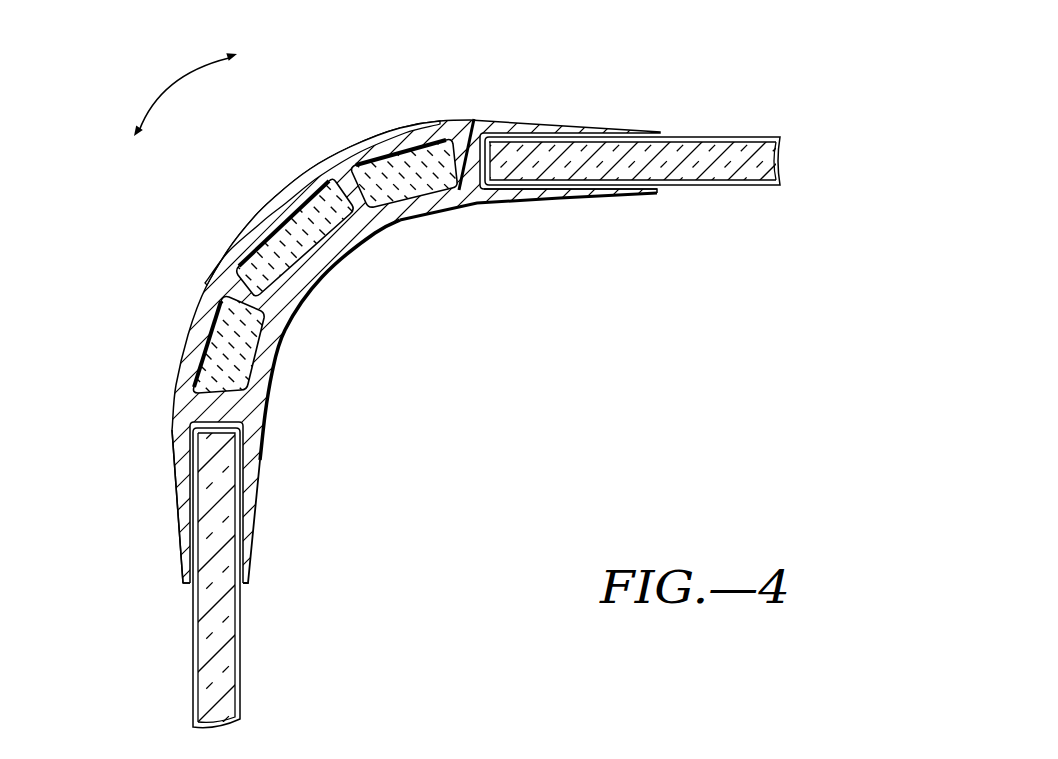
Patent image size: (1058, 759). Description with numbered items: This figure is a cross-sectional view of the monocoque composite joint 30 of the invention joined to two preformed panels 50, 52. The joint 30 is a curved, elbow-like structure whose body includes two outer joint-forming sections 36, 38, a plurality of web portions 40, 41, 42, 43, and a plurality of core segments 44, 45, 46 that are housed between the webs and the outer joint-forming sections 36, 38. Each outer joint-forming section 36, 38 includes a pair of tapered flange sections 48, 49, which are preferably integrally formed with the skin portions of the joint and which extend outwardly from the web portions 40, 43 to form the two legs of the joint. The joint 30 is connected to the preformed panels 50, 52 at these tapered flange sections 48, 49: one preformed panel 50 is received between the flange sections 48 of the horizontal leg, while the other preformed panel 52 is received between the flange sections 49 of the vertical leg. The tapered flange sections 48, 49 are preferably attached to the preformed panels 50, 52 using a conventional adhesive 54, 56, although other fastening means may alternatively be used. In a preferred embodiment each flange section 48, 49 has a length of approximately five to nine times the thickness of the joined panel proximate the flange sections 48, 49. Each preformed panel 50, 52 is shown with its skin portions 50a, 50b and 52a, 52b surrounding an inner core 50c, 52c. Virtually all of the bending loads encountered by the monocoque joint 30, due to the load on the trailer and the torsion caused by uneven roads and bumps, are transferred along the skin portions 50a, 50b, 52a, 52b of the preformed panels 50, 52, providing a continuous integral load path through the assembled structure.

The monocoque composite joint 30 is at (326, 111).
The outer joint-forming section 36 is at (243, 414).
The outer joint-forming section 38 is at (470, 200).
The web portion 40 is at (469, 146).
The web portion 41 is at (327, 160).
The web portion 42 is at (213, 284).
The web portion 43 is at (190, 412).
The core segment 44 is at (426, 200).
The core segment 45 is at (305, 265).
The core segment 46 is at (240, 362).
The tapered flange section 48 is at (504, 128).
The tapered flange section 49 is at (250, 488).
The preformed panel 50 is at (644, 165).
The skin portion of preformed panel 50a is at (688, 137).
The skin portion of preformed panel 50b is at (692, 187).
The first tube core 50c is at (750, 170).
The preformed panel 52 is at (223, 567).
The skin portion of preformed panel 52a is at (190, 638).
The skin portion of preformed panel 52b is at (244, 627).
The second tube core 52c is at (221, 540).
The adhesive 54 is at (550, 194).
The adhesive 56 is at (188, 487).